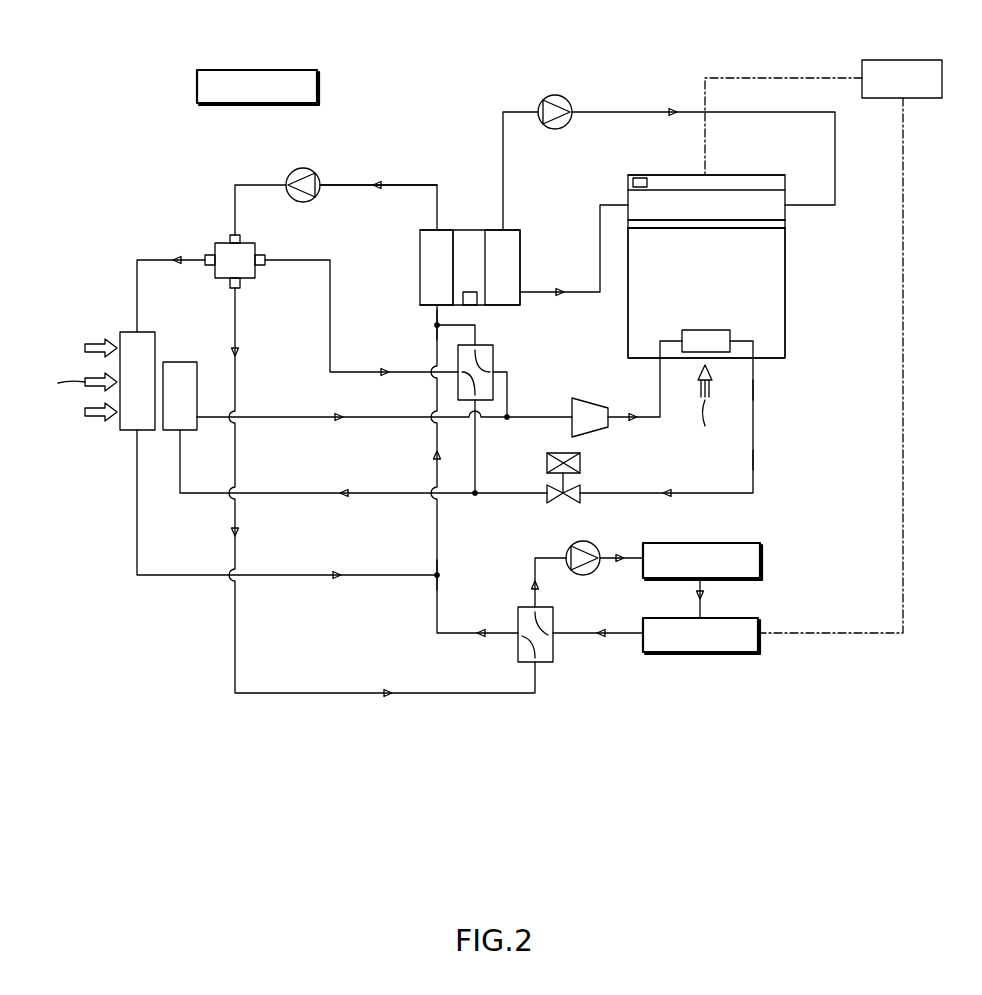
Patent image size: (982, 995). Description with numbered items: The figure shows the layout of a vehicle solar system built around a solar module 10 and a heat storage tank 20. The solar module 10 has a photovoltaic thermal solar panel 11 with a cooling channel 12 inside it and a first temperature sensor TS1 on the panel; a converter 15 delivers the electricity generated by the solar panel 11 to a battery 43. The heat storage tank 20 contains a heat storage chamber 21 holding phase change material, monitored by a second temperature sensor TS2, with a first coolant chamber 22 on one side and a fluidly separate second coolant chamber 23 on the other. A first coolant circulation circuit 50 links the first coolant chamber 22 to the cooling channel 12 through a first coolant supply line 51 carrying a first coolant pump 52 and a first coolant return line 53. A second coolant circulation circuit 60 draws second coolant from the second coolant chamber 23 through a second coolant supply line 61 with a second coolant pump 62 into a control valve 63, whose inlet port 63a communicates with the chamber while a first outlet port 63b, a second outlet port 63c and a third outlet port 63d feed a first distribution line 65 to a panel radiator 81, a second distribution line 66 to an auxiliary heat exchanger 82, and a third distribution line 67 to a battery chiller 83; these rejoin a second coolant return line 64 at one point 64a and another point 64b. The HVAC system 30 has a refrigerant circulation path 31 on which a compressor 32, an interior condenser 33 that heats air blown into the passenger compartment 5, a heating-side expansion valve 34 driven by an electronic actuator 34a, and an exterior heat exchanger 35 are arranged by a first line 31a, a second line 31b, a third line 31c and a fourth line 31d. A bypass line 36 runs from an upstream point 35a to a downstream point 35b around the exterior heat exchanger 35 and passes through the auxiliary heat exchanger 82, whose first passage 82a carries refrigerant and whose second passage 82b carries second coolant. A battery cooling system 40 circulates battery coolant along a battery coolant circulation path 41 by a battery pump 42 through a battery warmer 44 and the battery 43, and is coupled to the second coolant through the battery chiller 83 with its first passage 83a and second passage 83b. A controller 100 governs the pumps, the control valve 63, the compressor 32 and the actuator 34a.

The controller 100 is at (257, 68).
The converter 15 is at (903, 58).
The solar module 10 is at (725, 168).
The solar panel 11 is at (680, 175).
The cooling channel 12 is at (708, 212).
The passenger compartment 5 is at (748, 284).
The first temperature sensor TS1 is at (641, 178).
The second temperature sensor TS2 is at (472, 304).
The interior condenser 33 is at (705, 330).
The HVAC system 30 is at (762, 387).
The refrigerant circulation path 31 is at (762, 462).
The first line 31a is at (660, 378).
The second line 31b is at (753, 415).
The third line 31c is at (318, 496).
The fourth line 31d is at (318, 420).
The compressor 32 is at (593, 423).
The heating-side expansion valve 34 is at (580, 488).
The electronic actuator 34a is at (580, 462).
The exterior heat exchanger 35 is at (180, 360).
The upstream point 35a is at (477, 495).
The downstream point 35b is at (509, 415).
The bypass line 36 is at (477, 460).
The heat storage tank 20 is at (468, 222).
The heat storage chamber 21 is at (463, 240).
The first coolant chamber 22 is at (521, 240).
The second coolant chamber 23 is at (430, 268).
The first coolant circulation circuit 50 is at (622, 98).
The first coolant supply line 51 is at (593, 110).
The first coolant pump 52 is at (553, 95).
The first coolant return line 53 is at (600, 275).
The second coolant circulation circuit 60 is at (414, 166).
The second coolant supply line 61 is at (390, 185).
The second coolant pump 62 is at (301, 168).
The control valve 63 is at (245, 253).
The inlet port 63a is at (232, 237).
The first outlet port 63b is at (207, 258).
The second outlet port 63c is at (263, 257).
The third outlet port 63d is at (238, 288).
The second coolant return line 64 is at (435, 538).
The one point of second coolant return line 64a is at (440, 574).
The other point of second coolant return line 64b is at (435, 325).
The first distribution line 65 is at (137, 298).
The second distribution line 66 is at (330, 337).
The third distribution line 67 is at (236, 456).
The panel radiator 81 is at (140, 338).
The auxiliary heat exchanger 82 is at (495, 348).
The first passage 82a is at (491, 370).
The second passage 82b is at (460, 386).
The battery chiller 83 is at (550, 605).
The first passage 83a is at (548, 638).
The second passage 83b is at (538, 654).
The battery cooling system 40 is at (762, 598).
The battery coolant circulation path 41 is at (546, 560).
The battery pump 42 is at (598, 546).
The battery 43 is at (700, 655).
The battery warmer 44 is at (762, 558).